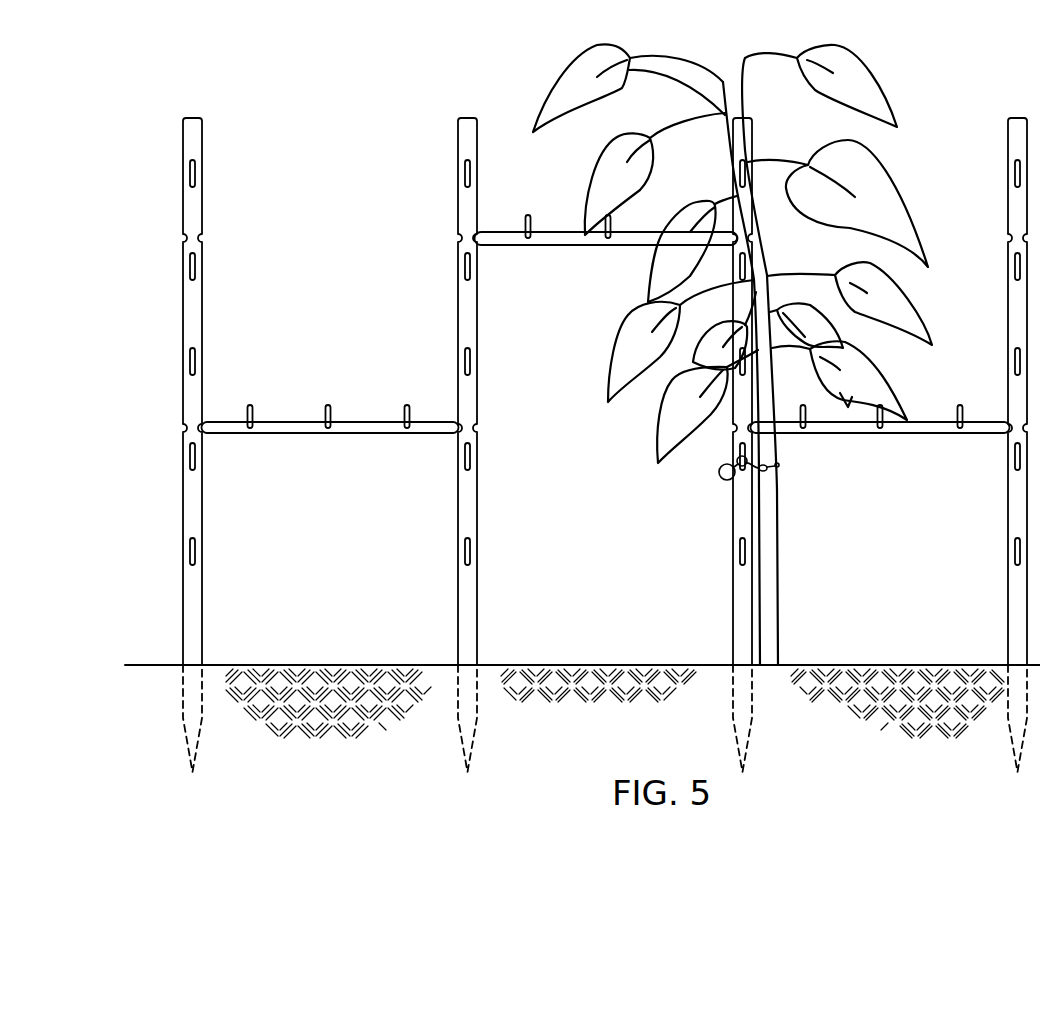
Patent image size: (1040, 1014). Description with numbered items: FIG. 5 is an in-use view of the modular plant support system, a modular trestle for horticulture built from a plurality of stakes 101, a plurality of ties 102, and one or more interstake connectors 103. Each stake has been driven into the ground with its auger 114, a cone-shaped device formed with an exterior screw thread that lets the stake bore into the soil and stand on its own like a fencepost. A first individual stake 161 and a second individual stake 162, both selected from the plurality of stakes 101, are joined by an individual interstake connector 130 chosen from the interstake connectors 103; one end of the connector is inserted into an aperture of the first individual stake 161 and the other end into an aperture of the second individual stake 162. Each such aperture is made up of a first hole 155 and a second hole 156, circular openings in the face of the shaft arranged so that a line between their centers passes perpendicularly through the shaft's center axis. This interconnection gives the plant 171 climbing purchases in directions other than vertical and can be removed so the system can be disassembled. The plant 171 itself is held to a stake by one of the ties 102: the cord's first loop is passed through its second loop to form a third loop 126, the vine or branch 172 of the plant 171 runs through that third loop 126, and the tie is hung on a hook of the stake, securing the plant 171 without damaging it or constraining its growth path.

The plurality of stakes 101 is at (460, 203).
The first individual stake 161 is at (201, 132).
The second individual stake 162 is at (461, 132).
The individual interstake connector 130 is at (280, 434).
The first hole 155 is at (208, 425).
The second hole 156 is at (452, 424).
The interstake connectors 103 is at (373, 422).
The auger 114 is at (465, 740).
The plant 171 is at (775, 586).
The vine or branch 172 is at (670, 60).
The plurality of ties 102 is at (740, 478).
The third loop 126 is at (777, 468).